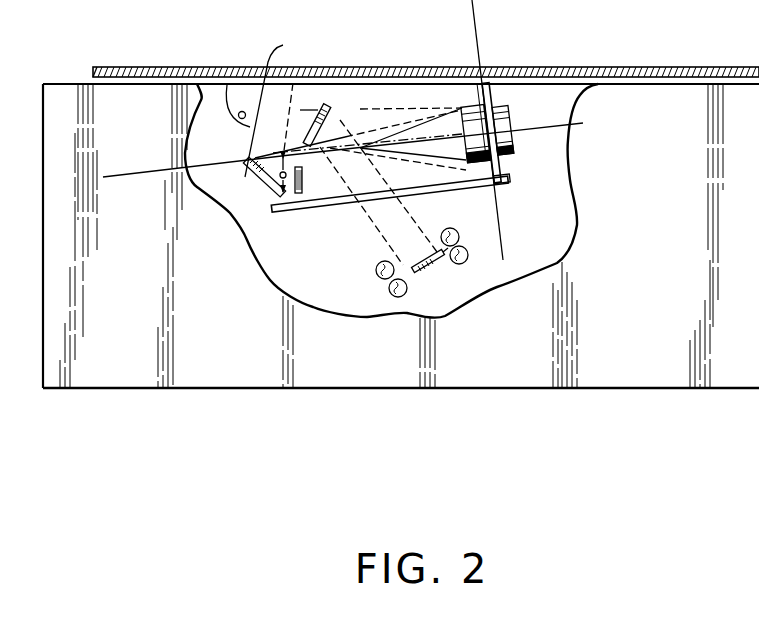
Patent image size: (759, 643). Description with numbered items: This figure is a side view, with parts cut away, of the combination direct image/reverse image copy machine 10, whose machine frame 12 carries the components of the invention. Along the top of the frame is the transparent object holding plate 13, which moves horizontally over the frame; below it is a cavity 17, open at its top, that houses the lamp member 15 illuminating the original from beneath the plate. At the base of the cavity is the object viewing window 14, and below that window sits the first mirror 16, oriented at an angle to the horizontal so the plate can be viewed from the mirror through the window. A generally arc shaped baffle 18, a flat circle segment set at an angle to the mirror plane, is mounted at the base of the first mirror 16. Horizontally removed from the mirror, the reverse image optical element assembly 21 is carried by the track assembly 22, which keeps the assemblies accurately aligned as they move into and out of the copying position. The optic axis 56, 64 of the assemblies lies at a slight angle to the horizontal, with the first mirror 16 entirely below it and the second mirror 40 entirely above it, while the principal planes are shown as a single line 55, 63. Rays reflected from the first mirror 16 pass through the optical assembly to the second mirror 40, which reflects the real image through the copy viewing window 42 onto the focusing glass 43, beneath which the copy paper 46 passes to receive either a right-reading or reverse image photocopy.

The copy machine 10 is at (144, 392).
The machine frame 12 is at (222, 317).
The transparent object holding plate 13 is at (300, 110).
The object viewing window 14 is at (254, 126).
The lamp member 15 is at (271, 102).
The first mirror 16 is at (246, 196).
The cavity 17 is at (242, 111).
The baffle 18 is at (303, 180).
The reverse image optical element assembly 21 is at (500, 147).
The track assembly 22 is at (500, 88).
The second mirror 40 is at (332, 119).
The copy viewing window 42 is at (356, 206).
The focusing glass 43 is at (418, 272).
The copy paper 46 is at (452, 244).
The principal plane 55 is at (513, 130).
The principal plane 63 is at (477, 53).
The optic axis 56 is at (381, 150).
The optic axis 64 is at (583, 123).